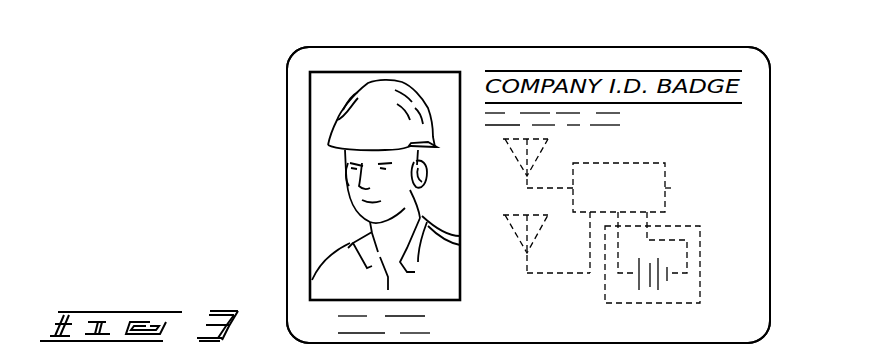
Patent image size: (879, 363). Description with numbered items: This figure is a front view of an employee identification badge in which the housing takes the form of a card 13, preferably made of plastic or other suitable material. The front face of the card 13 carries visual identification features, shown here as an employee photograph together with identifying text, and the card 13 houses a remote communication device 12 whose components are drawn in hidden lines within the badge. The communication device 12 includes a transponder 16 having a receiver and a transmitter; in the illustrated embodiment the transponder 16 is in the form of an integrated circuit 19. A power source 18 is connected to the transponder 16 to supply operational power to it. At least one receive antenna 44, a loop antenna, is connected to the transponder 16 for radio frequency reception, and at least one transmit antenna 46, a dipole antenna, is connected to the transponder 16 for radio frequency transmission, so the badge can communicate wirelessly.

The remote communication device 12 is at (741, 167).
The card 13 is at (286, 122).
The transponder 16 is at (633, 190).
The power source 18 is at (702, 262).
The integrated circuit 19 is at (668, 188).
The receive antenna 44 is at (512, 152).
The transmit antenna 46 is at (513, 232).